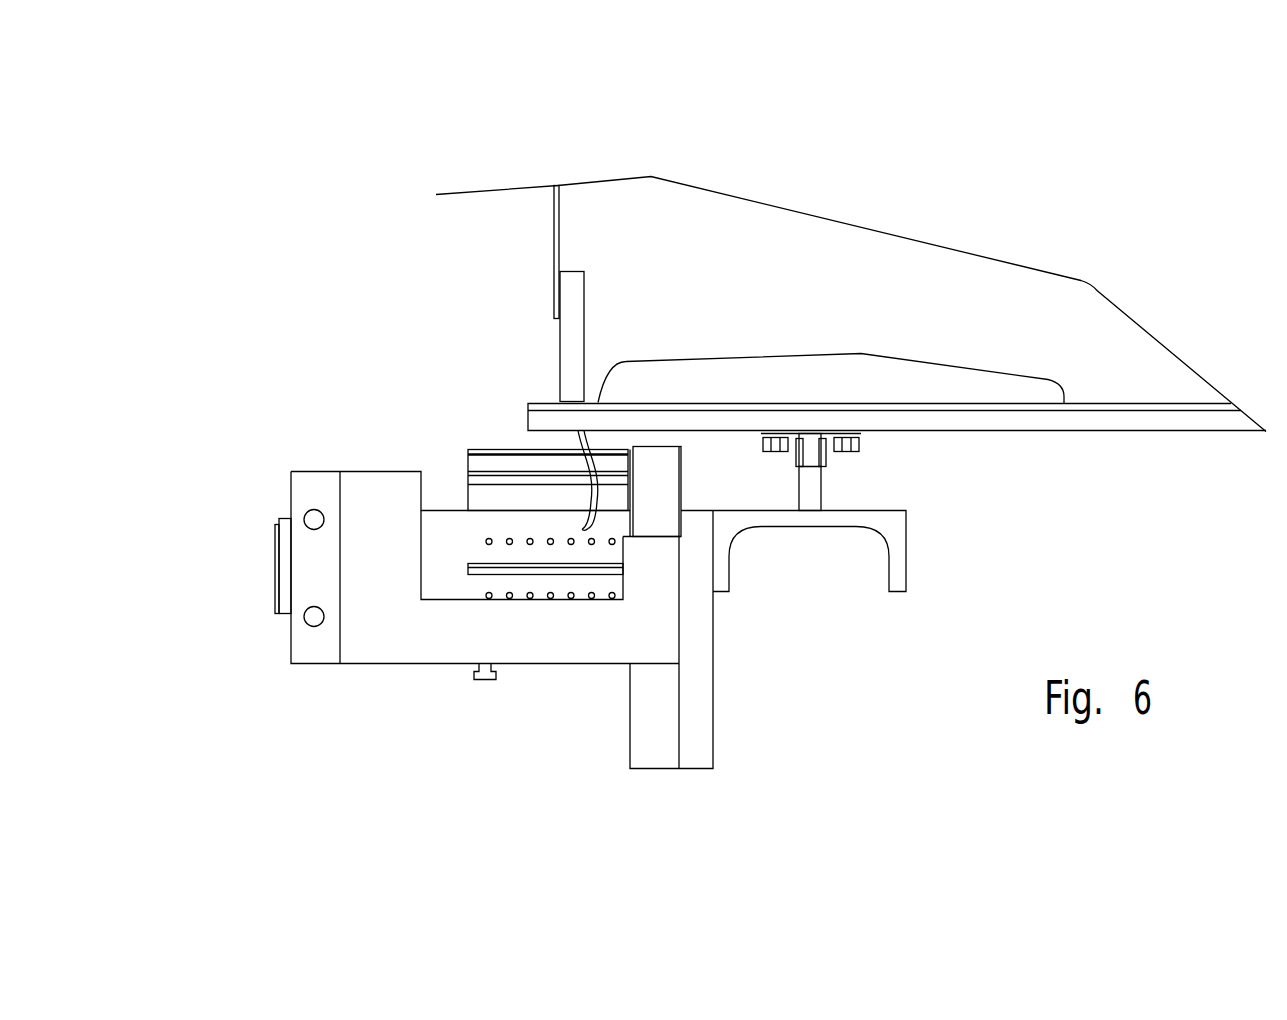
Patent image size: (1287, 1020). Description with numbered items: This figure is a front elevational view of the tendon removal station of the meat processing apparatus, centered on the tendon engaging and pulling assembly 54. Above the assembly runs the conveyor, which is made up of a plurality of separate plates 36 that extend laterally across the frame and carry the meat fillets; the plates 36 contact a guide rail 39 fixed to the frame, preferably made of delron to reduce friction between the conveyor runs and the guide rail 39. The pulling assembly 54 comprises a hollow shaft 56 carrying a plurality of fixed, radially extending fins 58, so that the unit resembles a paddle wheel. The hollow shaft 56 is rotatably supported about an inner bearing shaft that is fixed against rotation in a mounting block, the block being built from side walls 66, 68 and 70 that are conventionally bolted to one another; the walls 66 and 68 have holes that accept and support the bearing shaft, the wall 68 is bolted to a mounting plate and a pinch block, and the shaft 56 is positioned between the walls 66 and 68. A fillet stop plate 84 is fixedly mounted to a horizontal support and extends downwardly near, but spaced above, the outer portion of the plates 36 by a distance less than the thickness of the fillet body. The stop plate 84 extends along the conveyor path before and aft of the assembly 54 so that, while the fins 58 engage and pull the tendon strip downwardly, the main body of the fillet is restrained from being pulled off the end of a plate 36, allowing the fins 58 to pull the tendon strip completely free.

The plate 36 is at (1162, 429).
The guide rail 39 is at (820, 482).
The tendon engaging and pulling assembly 54 is at (232, 700).
The hollow shaft 56 is at (447, 509).
The fins 58 is at (563, 567).
The side wall 66 is at (288, 642).
The side wall 68 is at (680, 472).
The side wall 70 is at (393, 637).
The fillet stop plate 84 is at (570, 318).